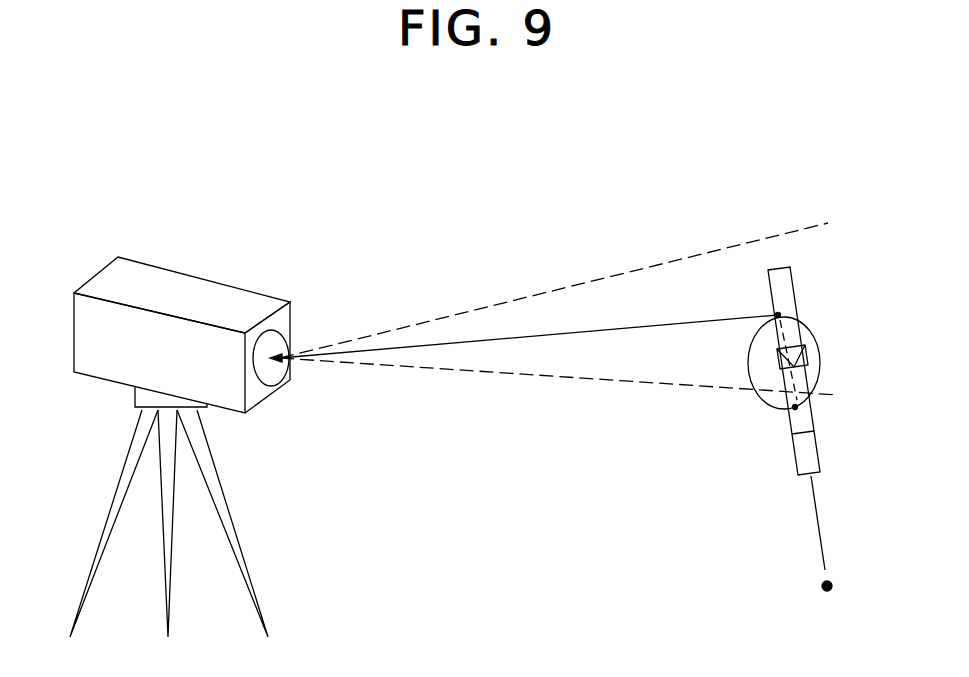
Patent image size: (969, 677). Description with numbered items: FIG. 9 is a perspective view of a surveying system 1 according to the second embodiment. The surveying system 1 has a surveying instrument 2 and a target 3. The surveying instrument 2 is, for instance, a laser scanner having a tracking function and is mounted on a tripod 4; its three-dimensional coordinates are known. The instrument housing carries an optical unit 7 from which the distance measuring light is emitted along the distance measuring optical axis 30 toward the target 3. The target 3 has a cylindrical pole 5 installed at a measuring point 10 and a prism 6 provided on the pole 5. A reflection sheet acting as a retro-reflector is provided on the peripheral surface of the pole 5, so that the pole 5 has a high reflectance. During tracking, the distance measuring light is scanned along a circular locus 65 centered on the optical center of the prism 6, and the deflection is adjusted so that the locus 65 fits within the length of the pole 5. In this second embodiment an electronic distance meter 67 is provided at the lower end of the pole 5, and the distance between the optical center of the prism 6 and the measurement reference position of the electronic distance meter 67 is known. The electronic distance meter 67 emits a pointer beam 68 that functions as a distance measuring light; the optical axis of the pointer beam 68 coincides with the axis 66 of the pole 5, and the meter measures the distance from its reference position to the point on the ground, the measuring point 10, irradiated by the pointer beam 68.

The surveying system 1 is at (251, 131).
The surveying instrument 2 is at (163, 256).
The distance measuring unit (telescope) 7 is at (225, 283).
The tripod 4 is at (225, 495).
The distance measuring optical axis 30 is at (497, 340).
The target 3 is at (777, 260).
The pole 5 is at (792, 298).
The axis of the pole 66 is at (788, 338).
The prism 6 is at (800, 357).
The circular locus 65 is at (750, 352).
The electronic distance meter 67 is at (797, 460).
The pointer beam 68 is at (815, 522).
The measuring point 10 is at (822, 585).